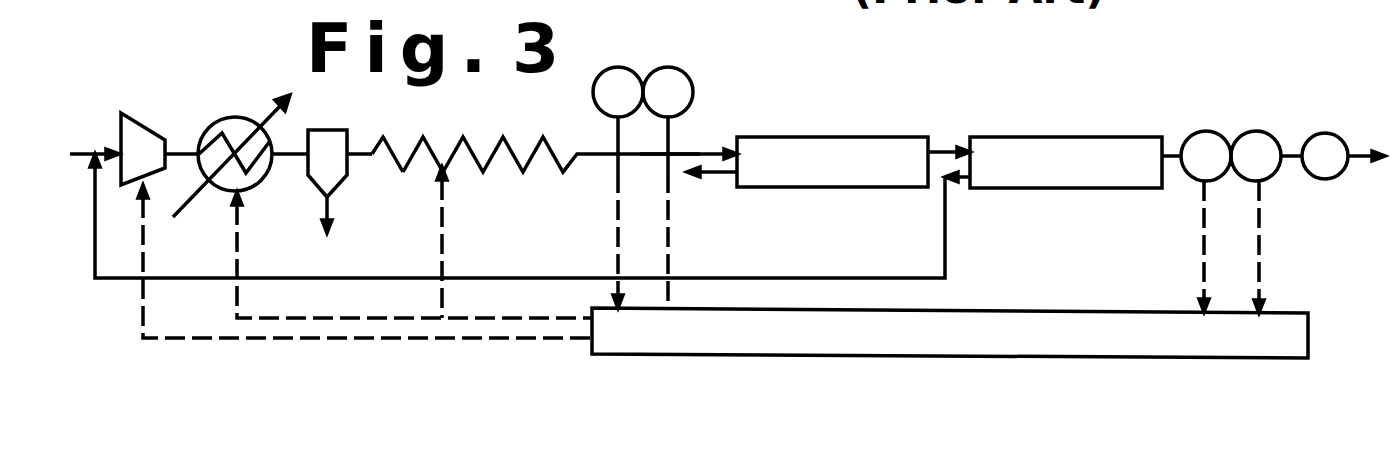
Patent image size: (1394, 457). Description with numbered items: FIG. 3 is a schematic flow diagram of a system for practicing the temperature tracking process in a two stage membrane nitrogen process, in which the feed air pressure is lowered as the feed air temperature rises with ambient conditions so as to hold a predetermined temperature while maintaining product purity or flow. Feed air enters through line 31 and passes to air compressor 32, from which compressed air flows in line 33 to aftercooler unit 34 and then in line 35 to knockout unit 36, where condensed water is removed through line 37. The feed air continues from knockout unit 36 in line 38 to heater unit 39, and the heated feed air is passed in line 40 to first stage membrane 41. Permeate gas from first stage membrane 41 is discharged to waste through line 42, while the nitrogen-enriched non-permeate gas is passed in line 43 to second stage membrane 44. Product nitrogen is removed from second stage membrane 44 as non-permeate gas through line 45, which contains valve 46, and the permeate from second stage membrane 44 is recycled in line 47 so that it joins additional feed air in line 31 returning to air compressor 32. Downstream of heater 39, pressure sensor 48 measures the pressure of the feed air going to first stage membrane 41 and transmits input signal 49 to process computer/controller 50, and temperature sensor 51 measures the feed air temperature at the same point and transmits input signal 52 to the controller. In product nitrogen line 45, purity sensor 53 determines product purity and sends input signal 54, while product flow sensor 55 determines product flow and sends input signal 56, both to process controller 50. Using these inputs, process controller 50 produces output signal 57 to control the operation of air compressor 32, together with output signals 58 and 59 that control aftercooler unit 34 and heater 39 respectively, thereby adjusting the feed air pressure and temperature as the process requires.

The line 31 is at (83, 150).
The air compressor 32 is at (140, 127).
The line 33 is at (187, 150).
The aftercooler unit 34 is at (227, 117).
The line 35 is at (295, 150).
The knockout unit 36 is at (347, 130).
The line 37 is at (323, 207).
The line 38 is at (358, 157).
The heater unit 39 is at (427, 143).
The line 40 is at (690, 148).
The first stage membrane 41 is at (798, 135).
The line 42 is at (717, 173).
The line 43 is at (945, 150).
The second stage membrane 44 is at (1023, 137).
The line 45 is at (1368, 194).
The valve 46 is at (1308, 133).
The line 47 is at (900, 278).
The pressure sensor 48 is at (638, 67).
The input signal 49 is at (615, 192).
The process computer/controller 50 is at (958, 306).
The temperature sensor 51 is at (678, 67).
The input signal 52 is at (672, 237).
The purity sensor 53 is at (1187, 132).
The input signal 54 is at (1203, 222).
The product flow sensor 55 is at (1247, 128).
The input signal 56 is at (1262, 222).
The output signal 57 is at (145, 298).
The output signal 58 is at (252, 318).
The output signal 59 is at (442, 295).